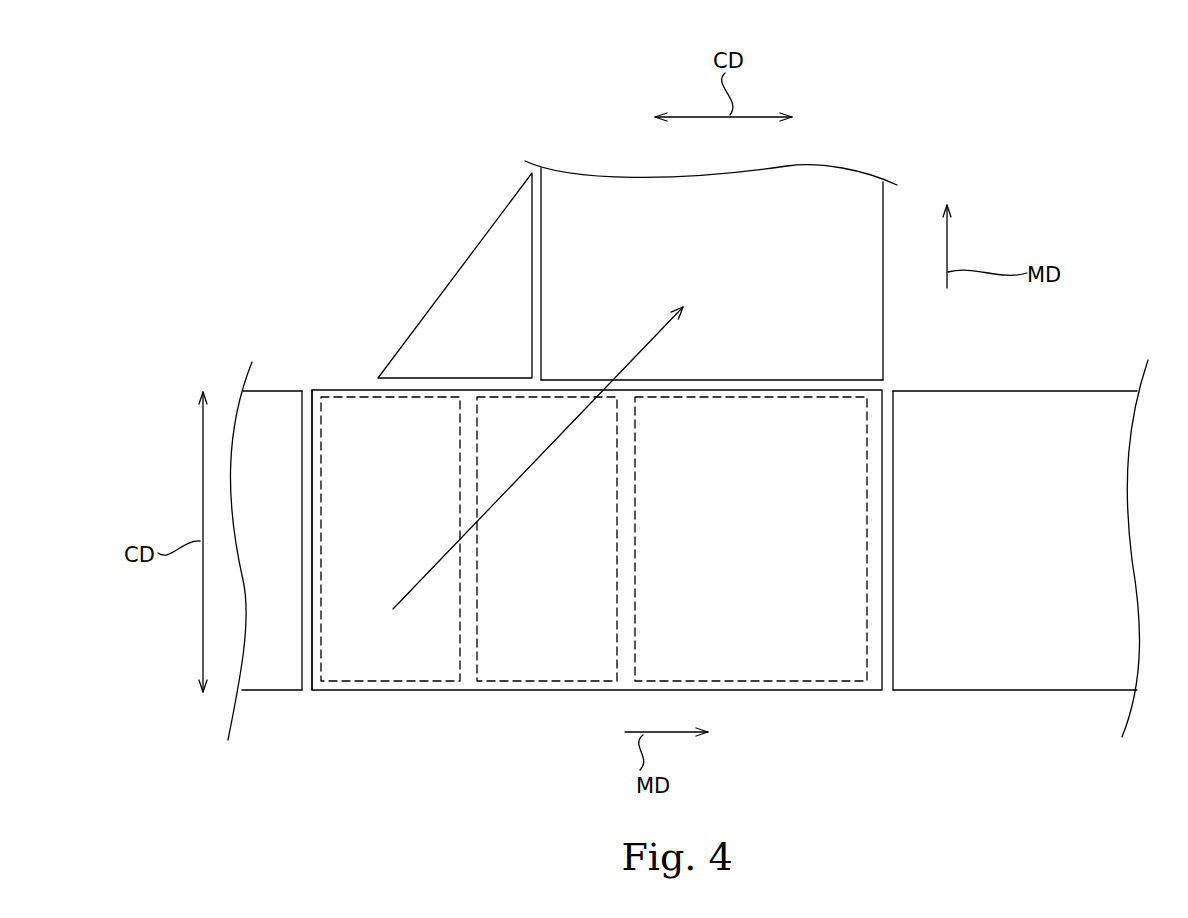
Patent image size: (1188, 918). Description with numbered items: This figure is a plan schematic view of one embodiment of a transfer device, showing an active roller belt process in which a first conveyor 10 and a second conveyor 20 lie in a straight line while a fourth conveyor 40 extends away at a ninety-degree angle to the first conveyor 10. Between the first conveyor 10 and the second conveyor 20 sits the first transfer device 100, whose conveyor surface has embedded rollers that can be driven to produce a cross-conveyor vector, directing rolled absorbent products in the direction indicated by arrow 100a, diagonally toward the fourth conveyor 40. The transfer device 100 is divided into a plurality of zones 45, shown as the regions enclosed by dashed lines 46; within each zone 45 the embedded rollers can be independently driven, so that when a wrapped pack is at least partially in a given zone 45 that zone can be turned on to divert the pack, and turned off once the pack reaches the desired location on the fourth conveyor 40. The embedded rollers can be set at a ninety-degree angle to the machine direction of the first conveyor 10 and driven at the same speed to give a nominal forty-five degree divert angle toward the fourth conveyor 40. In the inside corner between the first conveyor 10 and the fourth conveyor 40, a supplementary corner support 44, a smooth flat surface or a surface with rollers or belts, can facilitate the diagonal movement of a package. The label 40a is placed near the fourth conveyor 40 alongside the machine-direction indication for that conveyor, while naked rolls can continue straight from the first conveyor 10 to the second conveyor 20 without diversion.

The first conveyor 10 is at (270, 677).
The second conveyor 20 is at (1028, 672).
The fourth conveyor 40 is at (867, 352).
The machine direction of folded panel 40a is at (948, 248).
The corner support 44 is at (455, 302).
The zones 45 is at (386, 665).
The dashed lines 46 is at (337, 392).
The first transfer device 100 is at (625, 667).
The arrow 100a is at (653, 342).